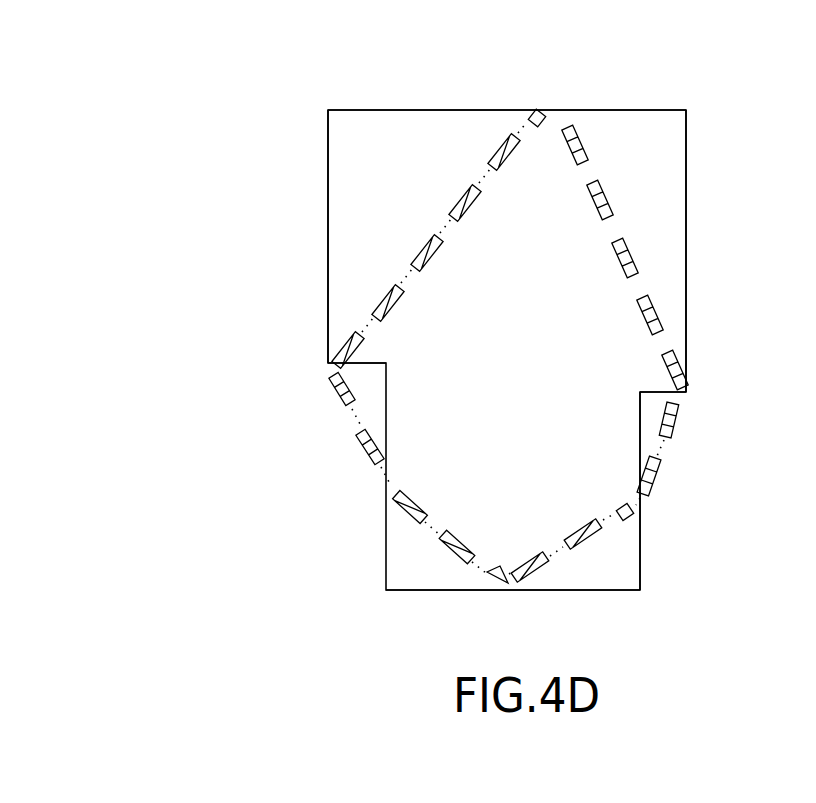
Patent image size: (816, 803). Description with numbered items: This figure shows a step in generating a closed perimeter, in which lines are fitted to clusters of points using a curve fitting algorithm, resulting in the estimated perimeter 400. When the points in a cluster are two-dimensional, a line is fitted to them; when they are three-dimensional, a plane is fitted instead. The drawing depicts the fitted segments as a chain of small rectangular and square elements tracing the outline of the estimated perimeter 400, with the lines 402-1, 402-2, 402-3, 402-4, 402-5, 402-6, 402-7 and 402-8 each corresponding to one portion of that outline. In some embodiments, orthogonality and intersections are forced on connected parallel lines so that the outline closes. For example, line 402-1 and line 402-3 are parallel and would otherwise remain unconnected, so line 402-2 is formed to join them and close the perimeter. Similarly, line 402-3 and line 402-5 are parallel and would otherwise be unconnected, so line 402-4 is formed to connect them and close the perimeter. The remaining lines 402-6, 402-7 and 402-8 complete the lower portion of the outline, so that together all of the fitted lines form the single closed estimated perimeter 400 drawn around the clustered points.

The estimated perimeter 400 is at (380, 110).
The line 402-1 is at (330, 372).
The line 402-2 is at (328, 283).
The line 402-3 is at (495, 110).
The line 402-4 is at (686, 222).
The line 402-5 is at (665, 397).
The line 402-6 is at (644, 520).
The line 402-7 is at (420, 589).
The line 402-8 is at (365, 430).